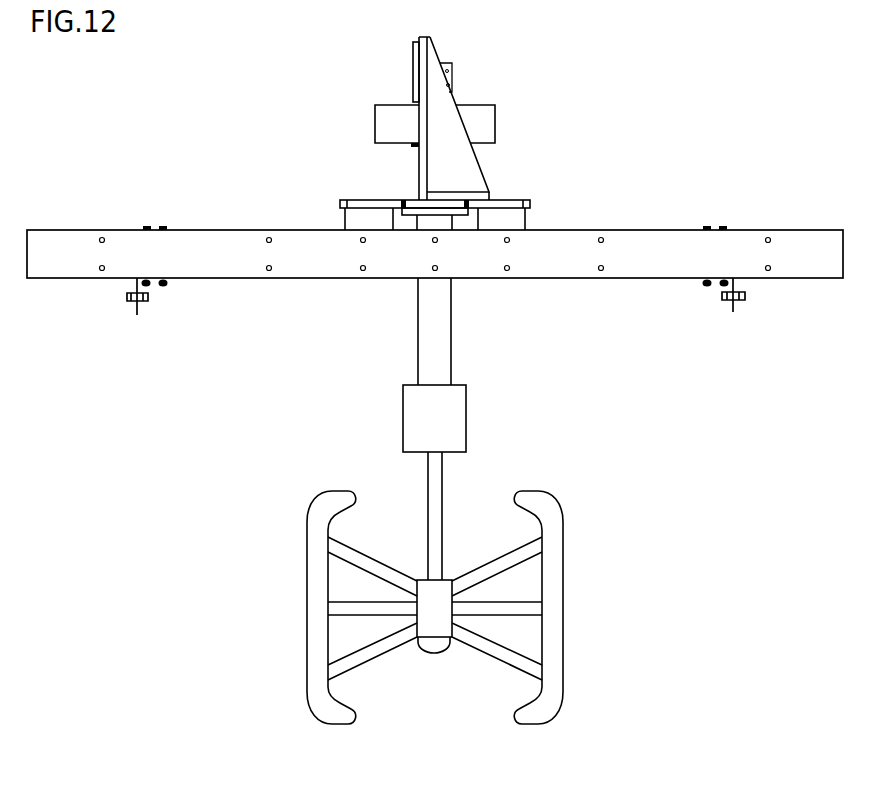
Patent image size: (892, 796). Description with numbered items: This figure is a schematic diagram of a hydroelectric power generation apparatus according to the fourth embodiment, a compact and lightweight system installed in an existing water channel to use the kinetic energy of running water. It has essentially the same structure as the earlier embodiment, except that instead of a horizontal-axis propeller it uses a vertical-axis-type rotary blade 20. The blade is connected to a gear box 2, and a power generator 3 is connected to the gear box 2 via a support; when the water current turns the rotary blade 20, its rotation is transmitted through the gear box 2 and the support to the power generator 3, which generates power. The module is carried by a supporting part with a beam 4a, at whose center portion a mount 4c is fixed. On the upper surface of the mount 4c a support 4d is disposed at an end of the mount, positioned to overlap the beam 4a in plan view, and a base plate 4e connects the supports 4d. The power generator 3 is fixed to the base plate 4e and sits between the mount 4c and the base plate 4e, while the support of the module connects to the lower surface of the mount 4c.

The gear box 2 is at (455, 405).
The power generator 3 is at (388, 117).
The beam 4a is at (234, 268).
The mount 4c is at (362, 203).
The support 4d is at (463, 165).
The base plate 4e is at (414, 55).
The vertical-axis-type rotary blade 20 is at (553, 577).